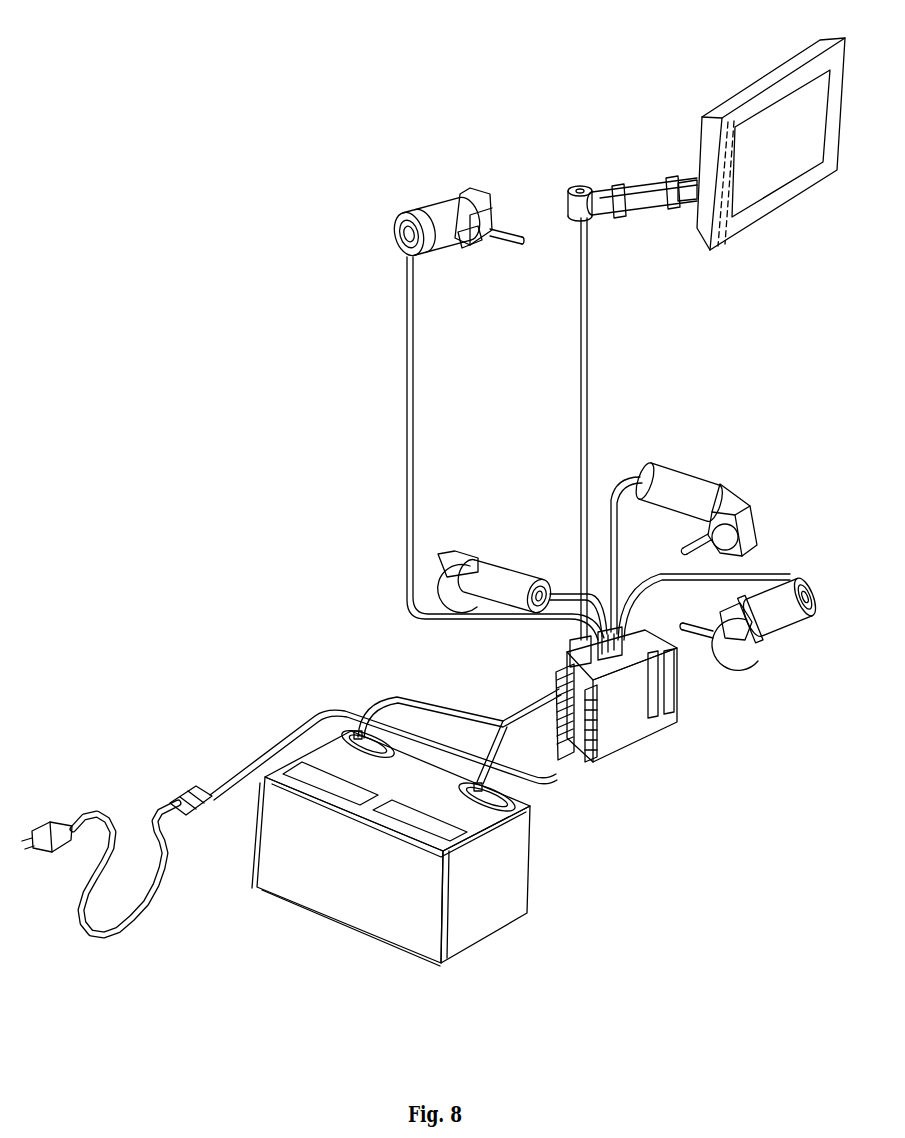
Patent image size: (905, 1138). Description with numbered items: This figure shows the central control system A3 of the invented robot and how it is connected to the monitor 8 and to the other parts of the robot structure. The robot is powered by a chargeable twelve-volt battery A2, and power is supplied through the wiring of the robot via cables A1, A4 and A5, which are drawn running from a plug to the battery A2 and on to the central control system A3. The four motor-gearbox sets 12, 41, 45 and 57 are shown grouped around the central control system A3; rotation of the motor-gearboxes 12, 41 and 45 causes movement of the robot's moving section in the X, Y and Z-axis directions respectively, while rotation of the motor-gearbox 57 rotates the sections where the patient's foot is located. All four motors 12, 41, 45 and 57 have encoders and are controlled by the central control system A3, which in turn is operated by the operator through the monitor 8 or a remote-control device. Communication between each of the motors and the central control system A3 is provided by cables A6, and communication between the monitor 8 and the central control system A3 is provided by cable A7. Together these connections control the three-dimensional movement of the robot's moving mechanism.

The monitor 8 is at (699, 110).
The motor-gearbox 12 is at (671, 455).
The motor-gearbox 41 is at (498, 552).
The motor-gearbox 45 is at (812, 621).
The motor-gearbox 57 is at (437, 194).
The cable A1 is at (120, 938).
The chargeable 12 volts battery A2 is at (497, 883).
The central control system A3 is at (624, 693).
The cable A4 is at (320, 710).
The cable A5 is at (500, 718).
The cable A6 is at (419, 373).
The cable A7 is at (589, 363).